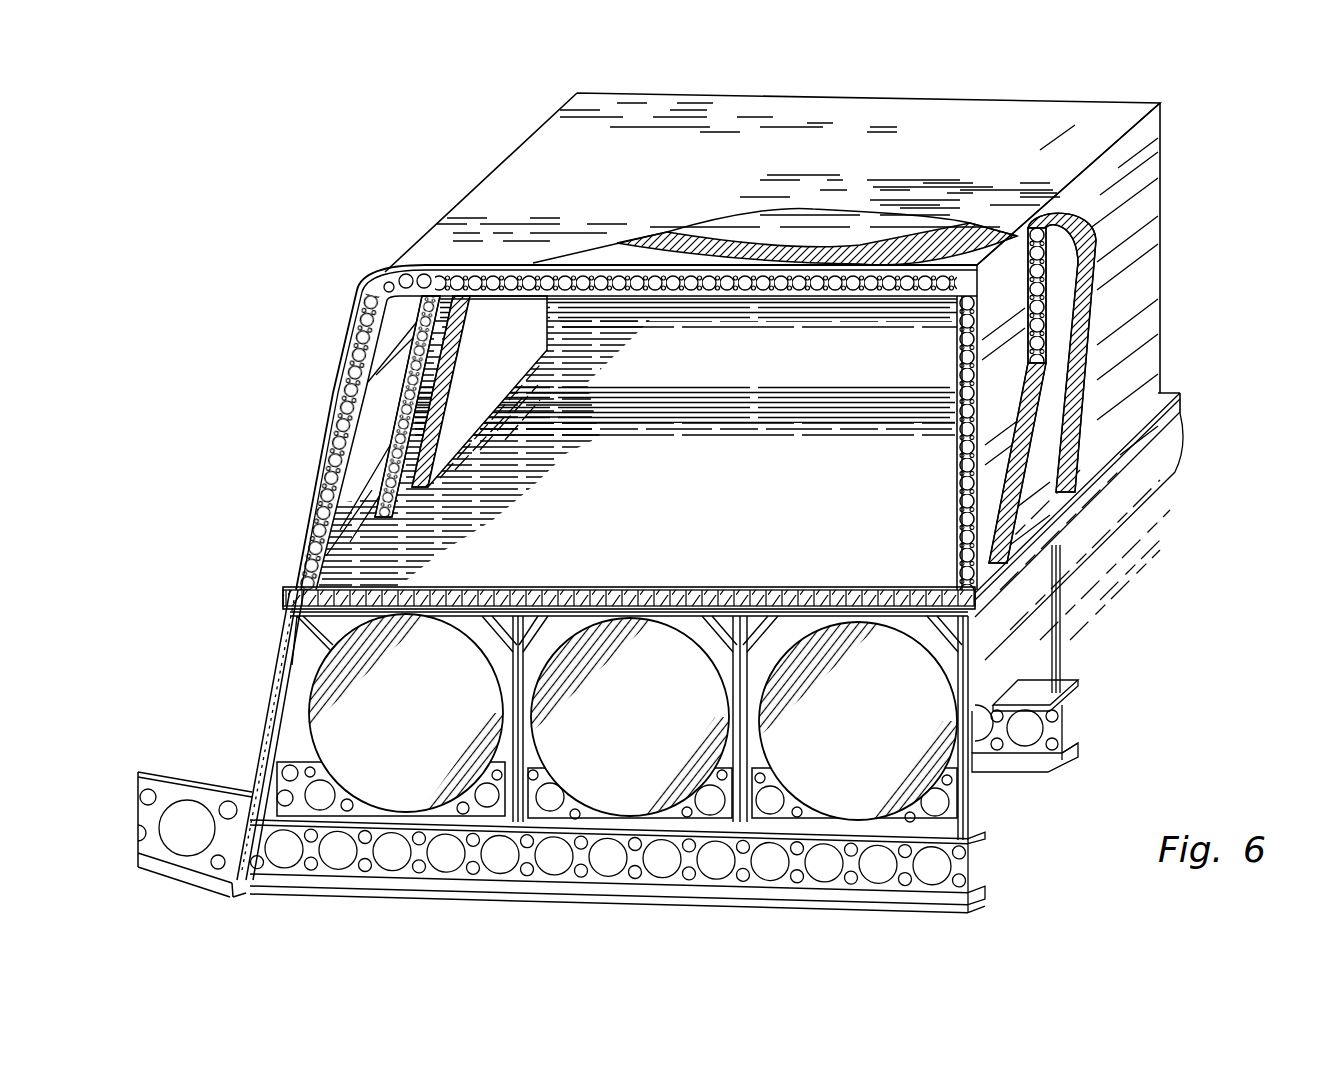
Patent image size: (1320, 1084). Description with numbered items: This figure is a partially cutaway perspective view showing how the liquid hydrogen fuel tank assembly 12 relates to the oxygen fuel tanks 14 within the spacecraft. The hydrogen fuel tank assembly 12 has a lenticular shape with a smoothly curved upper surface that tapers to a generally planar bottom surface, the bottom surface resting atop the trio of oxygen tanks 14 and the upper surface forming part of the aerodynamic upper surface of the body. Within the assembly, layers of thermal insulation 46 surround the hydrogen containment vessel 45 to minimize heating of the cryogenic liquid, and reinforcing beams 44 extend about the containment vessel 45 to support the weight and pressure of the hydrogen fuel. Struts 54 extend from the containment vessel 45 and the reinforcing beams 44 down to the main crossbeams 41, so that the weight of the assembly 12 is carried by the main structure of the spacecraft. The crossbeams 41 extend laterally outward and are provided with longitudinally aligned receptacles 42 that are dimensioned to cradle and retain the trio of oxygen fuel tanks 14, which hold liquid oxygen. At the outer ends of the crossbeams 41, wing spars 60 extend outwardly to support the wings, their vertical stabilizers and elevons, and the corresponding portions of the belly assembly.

The liquid hydrogen fuel tank assembly 12 is at (533, 183).
The oxygen fuel tank 14 is at (420, 725).
The crossbeam 41 is at (963, 857).
The receptacle 42 is at (277, 785).
The reinforcing beam 44 is at (330, 485).
The containment vessel 45 is at (487, 353).
The thermal insulation 46 is at (860, 223).
The strut 54 is at (525, 652).
The wing spar 60 is at (172, 777).